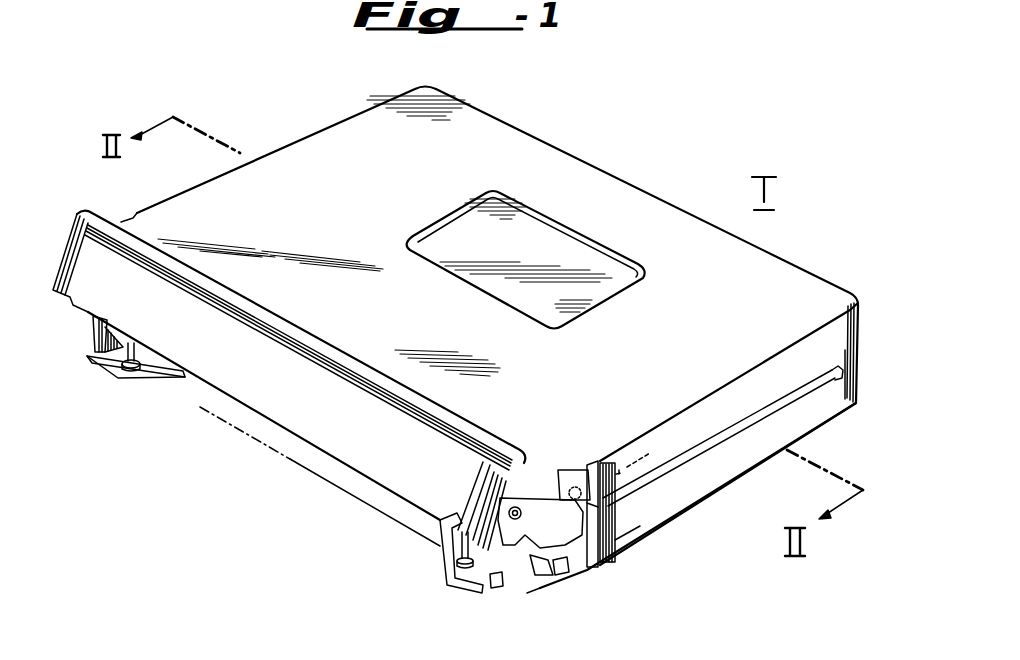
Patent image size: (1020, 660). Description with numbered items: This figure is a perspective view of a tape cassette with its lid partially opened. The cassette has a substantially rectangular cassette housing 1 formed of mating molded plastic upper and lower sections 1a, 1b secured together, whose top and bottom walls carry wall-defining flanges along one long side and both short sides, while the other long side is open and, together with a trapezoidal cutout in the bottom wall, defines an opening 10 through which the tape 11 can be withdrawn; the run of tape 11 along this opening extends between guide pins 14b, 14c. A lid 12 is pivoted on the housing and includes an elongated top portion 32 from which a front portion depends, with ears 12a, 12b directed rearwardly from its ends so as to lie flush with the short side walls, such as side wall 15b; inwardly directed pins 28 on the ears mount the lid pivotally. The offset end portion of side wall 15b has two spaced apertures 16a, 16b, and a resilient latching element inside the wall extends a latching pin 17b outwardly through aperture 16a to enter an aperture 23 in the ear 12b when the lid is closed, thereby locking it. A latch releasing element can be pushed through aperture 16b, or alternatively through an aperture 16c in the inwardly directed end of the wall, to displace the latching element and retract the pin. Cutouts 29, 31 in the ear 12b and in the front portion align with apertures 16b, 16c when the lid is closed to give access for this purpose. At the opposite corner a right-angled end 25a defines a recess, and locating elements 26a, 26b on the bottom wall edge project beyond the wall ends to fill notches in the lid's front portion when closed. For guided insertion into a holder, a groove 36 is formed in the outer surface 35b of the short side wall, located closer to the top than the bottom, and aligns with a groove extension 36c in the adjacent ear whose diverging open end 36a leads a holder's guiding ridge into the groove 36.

The cassette housing 1 is at (893, 310).
The upper section 1a is at (853, 332).
The lower section 1b is at (853, 382).
The opening 10 is at (437, 519).
The tape 11 is at (297, 468).
The lid 12 is at (273, 437).
The ear 12a is at (101, 217).
The ear 12b is at (588, 458).
The guide pin 14b is at (150, 380).
The guide pin 14c is at (454, 554).
The side wall 15b is at (575, 575).
The aperture 16a is at (620, 543).
The aperture 16b is at (600, 573).
The aperture 16c is at (497, 592).
The latching pin 17b is at (577, 567).
The aperture 23 is at (556, 580).
The right-angled end 25a is at (96, 332).
The locating element 26a is at (105, 380).
The locating element 26b is at (470, 590).
The pin 28 is at (669, 443).
The cutout 29 is at (649, 505).
The cutout 31 is at (510, 489).
The top portion 32 is at (478, 444).
The outer surface 35b is at (743, 404).
The groove 36 is at (793, 383).
The diverging open end 36a is at (533, 485).
The groove extension 36c is at (567, 462).